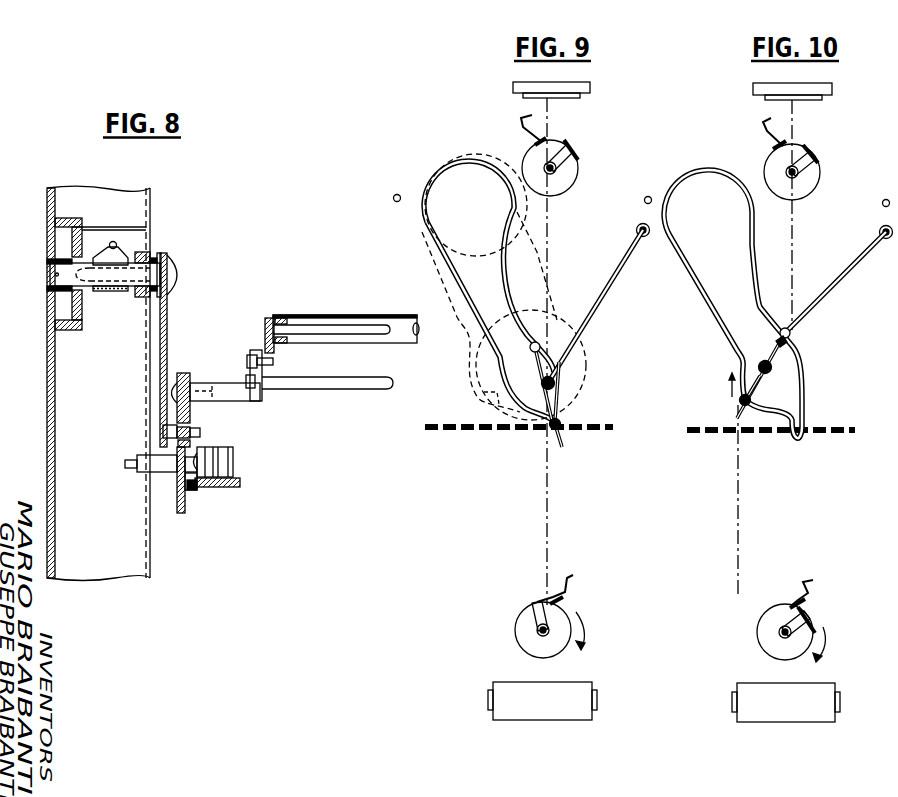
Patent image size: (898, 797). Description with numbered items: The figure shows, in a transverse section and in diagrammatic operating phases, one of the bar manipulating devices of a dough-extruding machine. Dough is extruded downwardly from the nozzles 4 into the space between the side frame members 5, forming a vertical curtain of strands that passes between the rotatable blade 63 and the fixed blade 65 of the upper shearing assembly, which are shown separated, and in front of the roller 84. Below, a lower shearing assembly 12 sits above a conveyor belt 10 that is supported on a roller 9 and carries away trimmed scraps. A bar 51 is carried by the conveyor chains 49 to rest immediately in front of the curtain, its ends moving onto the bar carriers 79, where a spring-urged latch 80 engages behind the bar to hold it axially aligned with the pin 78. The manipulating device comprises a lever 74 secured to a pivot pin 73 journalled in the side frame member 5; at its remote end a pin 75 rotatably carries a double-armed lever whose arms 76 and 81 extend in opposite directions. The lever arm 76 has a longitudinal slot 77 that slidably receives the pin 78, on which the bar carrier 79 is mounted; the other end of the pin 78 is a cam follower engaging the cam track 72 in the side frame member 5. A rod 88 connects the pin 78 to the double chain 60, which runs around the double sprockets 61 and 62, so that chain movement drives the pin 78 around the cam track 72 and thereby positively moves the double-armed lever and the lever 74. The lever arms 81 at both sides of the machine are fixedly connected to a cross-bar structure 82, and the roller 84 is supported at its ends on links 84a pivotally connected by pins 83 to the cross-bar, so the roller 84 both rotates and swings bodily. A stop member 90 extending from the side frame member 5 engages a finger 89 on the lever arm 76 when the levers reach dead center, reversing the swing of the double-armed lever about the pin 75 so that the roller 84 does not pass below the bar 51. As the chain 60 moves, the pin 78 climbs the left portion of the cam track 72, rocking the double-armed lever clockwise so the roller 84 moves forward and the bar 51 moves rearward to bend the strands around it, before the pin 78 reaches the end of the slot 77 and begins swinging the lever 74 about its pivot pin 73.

In FIG. 9, the nozzles 4 is at (514, 88).
In FIG. 8, the side frame member 5 is at (45, 403).
In FIG. 9, the rollers 9 is at (597, 695).
In FIG. 10, the rollers 9 is at (840, 697).
In FIG. 9, the conveyor belts 10 is at (532, 693).
In FIG. 9, the lower shearing assembly 12 is at (540, 610).
In FIG. 10, the lower shearing assembly 12 is at (795, 623).
In FIG. 9, the conveyor chains 49 is at (467, 431).
In FIG. 9, the bar 51 is at (559, 421).
In FIG. 10, the bar 51 is at (740, 400).
In FIG. 9, the double chain 60 is at (532, 238).
In FIG. 9, the double sprocket 61 is at (452, 167).
In FIG. 9, the double sprocket 62 is at (585, 377).
In FIG. 9, the rotatable blade 63 is at (558, 164).
In FIG. 9, the fixed blade 65 is at (553, 141).
In FIG. 9, the cam track 72 is at (462, 293).
In FIG. 8, the pivot pin 73 is at (167, 280).
In FIG. 9, the pivot pin 73 is at (642, 224).
In FIG. 10, the pivot pin 73 is at (887, 239).
In FIG. 8, the lever 74 is at (166, 336).
In FIG. 9, the lever 74 is at (617, 273).
In FIG. 10, the lever 74 is at (845, 287).
In FIG. 8, the pin 75 is at (200, 430).
In FIG. 9, the pin 75 is at (553, 381).
In FIG. 10, the pin 75 is at (771, 371).
In FIG. 8, the lever arm 76 is at (193, 447).
In FIG. 9, the lever arm 76 is at (558, 402).
In FIG. 10, the lever arm 76 is at (758, 391).
In FIG. 8, the longitudinal slot 77 is at (190, 488).
In FIG. 8, the pin 78 is at (161, 470).
In FIG. 8, the bar carrier 79 is at (232, 488).
In FIG. 8, the latch 80 is at (233, 452).
In FIG. 8, the lever arm 81 is at (190, 398).
In FIG. 10, the lever arm 81 is at (776, 349).
In FIG. 8, the cross-bar structure 82 is at (318, 384).
In FIG. 8, the pins 83 is at (263, 353).
In FIG. 8, the roller 84 is at (337, 315).
In FIG. 9, the roller 84 is at (541, 342).
In FIG. 10, the roller 84 is at (789, 337).
In FIG. 8, the links 84a is at (258, 322).
In FIG. 9, the rod 88 is at (490, 398).
In FIG. 8, the finger 89 is at (182, 516).
In FIG. 9, the finger 89 is at (563, 445).
In FIG. 9, the stop member 90 is at (397, 195).
In FIG. 10, the stop member 90 is at (887, 200).